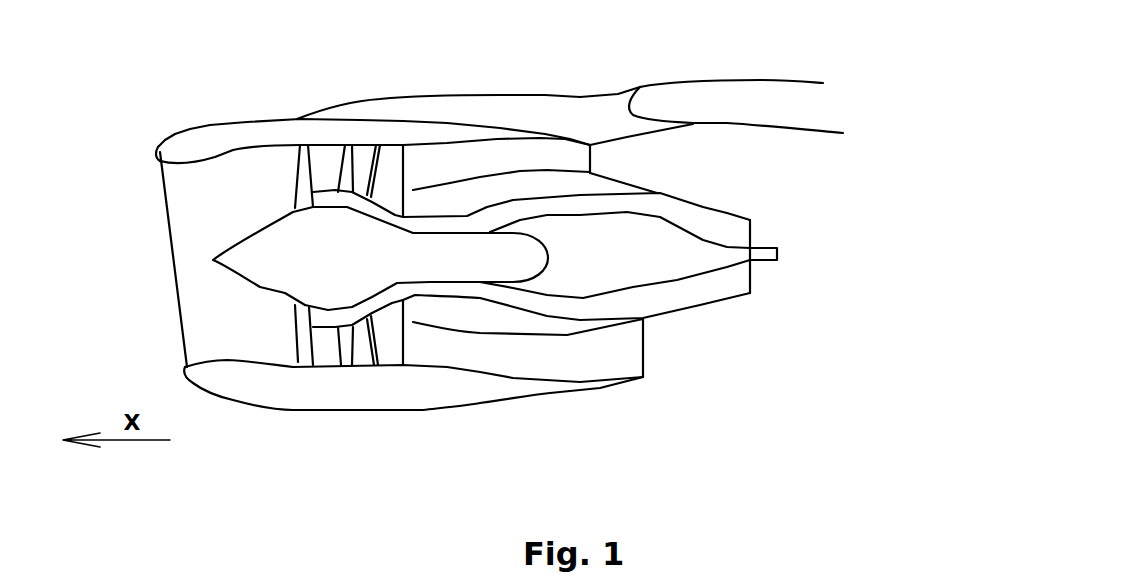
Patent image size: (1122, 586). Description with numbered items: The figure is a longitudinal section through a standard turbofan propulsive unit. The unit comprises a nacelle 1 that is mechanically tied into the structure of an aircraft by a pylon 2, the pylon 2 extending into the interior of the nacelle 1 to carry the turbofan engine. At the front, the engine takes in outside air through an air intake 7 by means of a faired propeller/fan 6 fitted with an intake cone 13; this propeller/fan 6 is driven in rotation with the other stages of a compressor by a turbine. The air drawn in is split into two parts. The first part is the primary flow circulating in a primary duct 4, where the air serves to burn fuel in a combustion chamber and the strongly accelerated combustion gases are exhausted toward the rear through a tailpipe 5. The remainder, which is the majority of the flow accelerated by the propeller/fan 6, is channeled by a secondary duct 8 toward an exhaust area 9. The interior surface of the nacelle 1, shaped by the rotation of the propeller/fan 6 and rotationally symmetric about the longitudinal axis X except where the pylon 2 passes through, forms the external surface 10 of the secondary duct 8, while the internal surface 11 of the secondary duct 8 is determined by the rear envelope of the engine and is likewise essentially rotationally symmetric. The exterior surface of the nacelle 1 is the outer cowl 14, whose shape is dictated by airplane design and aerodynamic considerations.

The nacelle 1 is at (180, 147).
The pylon 2 is at (493, 108).
The primary duct 4 is at (413, 290).
The tailpipe 5 is at (713, 305).
The propeller/fan 6 is at (303, 180).
The air intake 7 is at (170, 233).
The secondary duct 8 is at (453, 160).
The exhaust area 9 is at (645, 352).
The external surface of the secondary duct 10 is at (237, 152).
The internal surface of the secondary duct 11 is at (517, 170).
The intake cone 13 is at (260, 288).
The outer cowl 14 is at (348, 412).